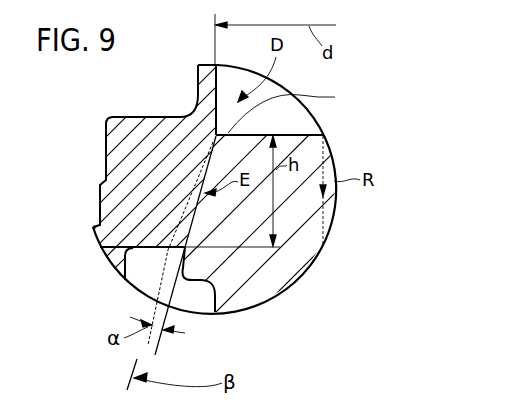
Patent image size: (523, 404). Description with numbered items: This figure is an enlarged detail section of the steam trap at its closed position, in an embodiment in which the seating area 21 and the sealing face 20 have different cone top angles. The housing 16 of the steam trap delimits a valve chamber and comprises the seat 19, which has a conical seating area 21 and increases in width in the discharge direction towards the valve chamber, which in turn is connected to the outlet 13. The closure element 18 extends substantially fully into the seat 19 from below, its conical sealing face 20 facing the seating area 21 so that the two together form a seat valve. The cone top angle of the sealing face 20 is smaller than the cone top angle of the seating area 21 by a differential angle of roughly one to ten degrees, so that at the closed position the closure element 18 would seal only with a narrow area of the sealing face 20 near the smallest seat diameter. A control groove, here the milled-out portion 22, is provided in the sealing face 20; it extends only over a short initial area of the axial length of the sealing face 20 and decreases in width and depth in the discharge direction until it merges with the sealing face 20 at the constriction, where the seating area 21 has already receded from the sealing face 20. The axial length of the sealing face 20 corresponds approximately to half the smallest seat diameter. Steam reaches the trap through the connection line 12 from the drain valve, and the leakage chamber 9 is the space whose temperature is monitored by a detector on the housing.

The leakage chamber 9 is at (225, 126).
The connection line 12 is at (226, 75).
The outlet 13 is at (115, 257).
The housing 16 is at (116, 125).
The closure element 18 is at (320, 140).
The seat 19 is at (198, 182).
The seating area 21 is at (222, 222).
The sealing face 20 is at (255, 303).
The milled-out portion 22 is at (292, 107).